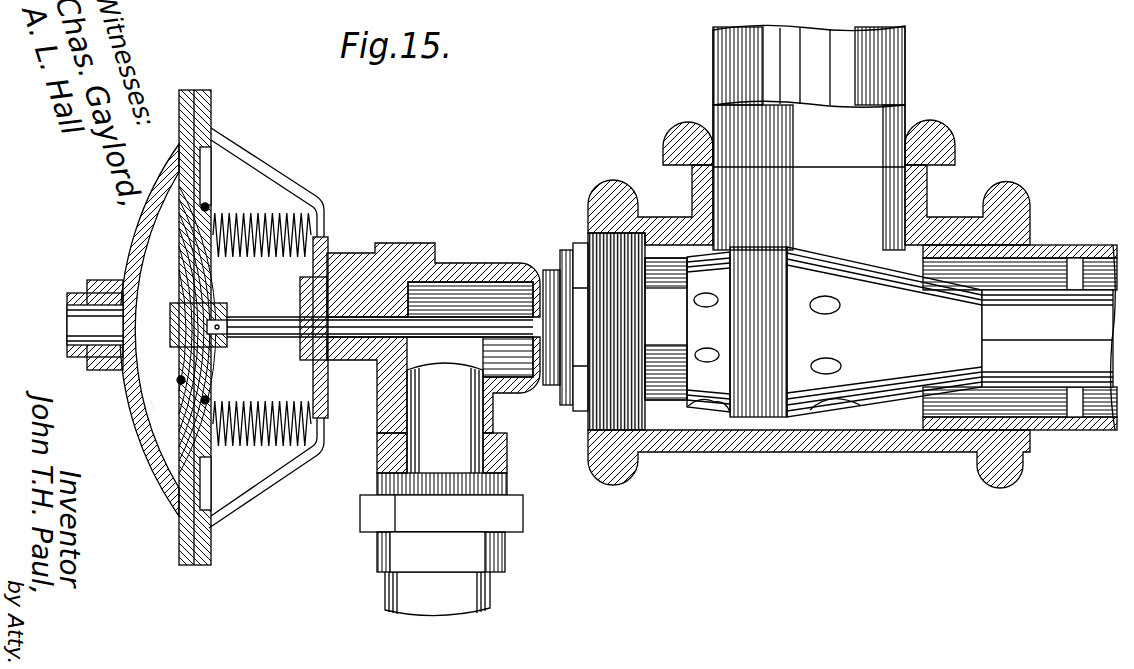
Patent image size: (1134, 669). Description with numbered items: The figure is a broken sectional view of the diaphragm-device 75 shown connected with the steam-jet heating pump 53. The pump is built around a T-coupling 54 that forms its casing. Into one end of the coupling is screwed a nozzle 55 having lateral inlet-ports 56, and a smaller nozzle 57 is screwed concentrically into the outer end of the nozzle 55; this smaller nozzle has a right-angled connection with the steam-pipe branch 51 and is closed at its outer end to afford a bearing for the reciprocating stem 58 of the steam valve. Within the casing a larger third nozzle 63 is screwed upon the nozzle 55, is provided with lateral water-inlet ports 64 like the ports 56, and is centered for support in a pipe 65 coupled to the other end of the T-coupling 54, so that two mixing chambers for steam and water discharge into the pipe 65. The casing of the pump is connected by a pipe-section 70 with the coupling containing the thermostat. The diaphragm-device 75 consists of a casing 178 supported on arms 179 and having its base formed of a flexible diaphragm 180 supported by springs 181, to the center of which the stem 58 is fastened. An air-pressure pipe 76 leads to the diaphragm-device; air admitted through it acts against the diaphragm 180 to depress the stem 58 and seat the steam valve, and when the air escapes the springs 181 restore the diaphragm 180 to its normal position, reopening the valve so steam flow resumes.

The steam-pipe branch 51 is at (497, 413).
The steam-jet pump 53 is at (936, 218).
The T-coupling 54 is at (871, 455).
The nozzle 55 is at (637, 331).
The lateral inlet-ports 56 is at (716, 350).
The smaller nozzle 57 is at (468, 268).
The valve stem 58 is at (246, 337).
The third nozzle 63 is at (834, 332).
The lateral water-inlet ports 64 is at (850, 318).
The pipe 65 is at (1052, 249).
The pipe-section 70 is at (906, 84).
The diaphragm-device 75 is at (165, 200).
The air-pressure pipe 76 is at (66, 315).
The casing 178 is at (122, 397).
The arms 179 is at (286, 185).
The flexible diaphragm 180 is at (187, 393).
The springs 181 is at (253, 258).